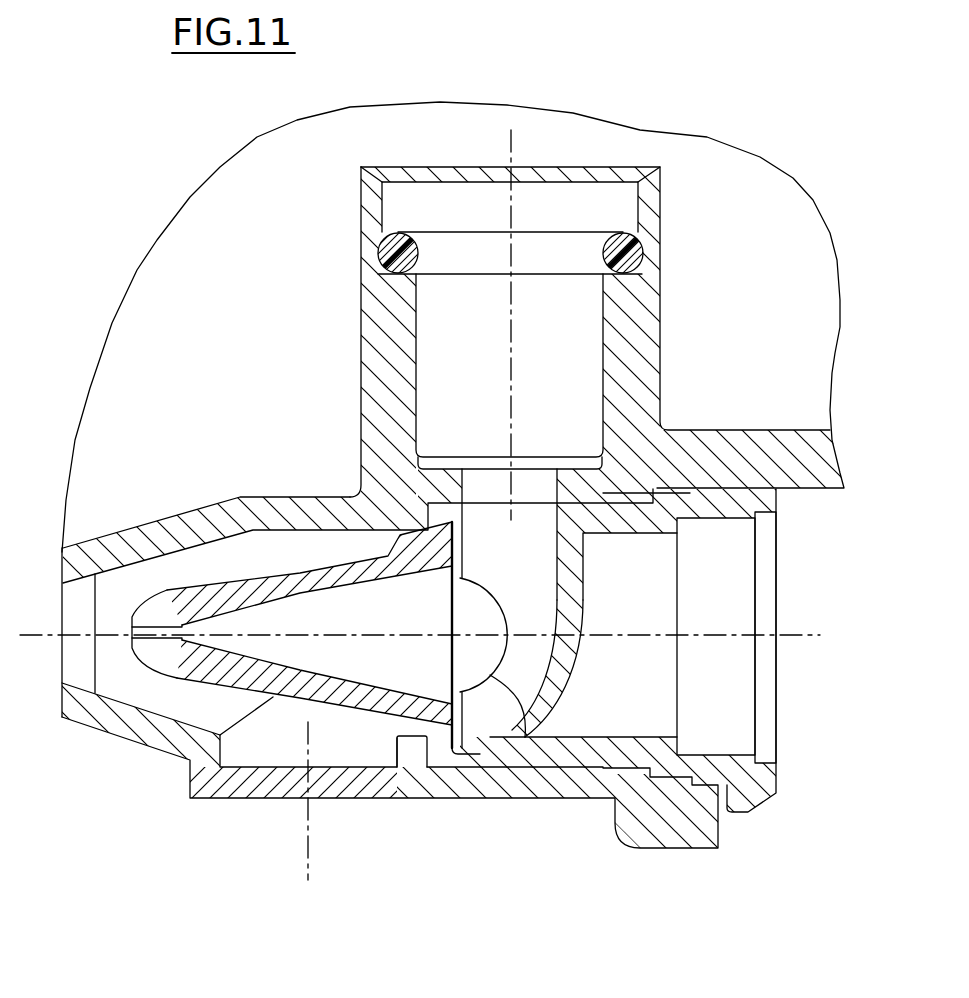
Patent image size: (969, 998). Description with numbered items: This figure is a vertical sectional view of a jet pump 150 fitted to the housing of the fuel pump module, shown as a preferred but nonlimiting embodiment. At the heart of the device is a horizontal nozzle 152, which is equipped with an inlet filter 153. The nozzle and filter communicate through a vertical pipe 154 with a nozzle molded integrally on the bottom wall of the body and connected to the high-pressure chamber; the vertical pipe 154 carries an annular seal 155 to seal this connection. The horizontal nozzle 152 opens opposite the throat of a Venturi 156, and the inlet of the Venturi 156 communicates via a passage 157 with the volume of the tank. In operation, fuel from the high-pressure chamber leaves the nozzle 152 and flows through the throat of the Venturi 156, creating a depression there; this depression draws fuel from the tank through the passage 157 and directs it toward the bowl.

The jet pump 150 is at (372, 822).
The horizontal nozzle 152 is at (207, 597).
The inlet filter 153 is at (521, 722).
The vertical pipe 154 is at (640, 348).
The annular seal 155 is at (603, 250).
The Venturi 156 is at (143, 727).
The passage 157 is at (258, 737).